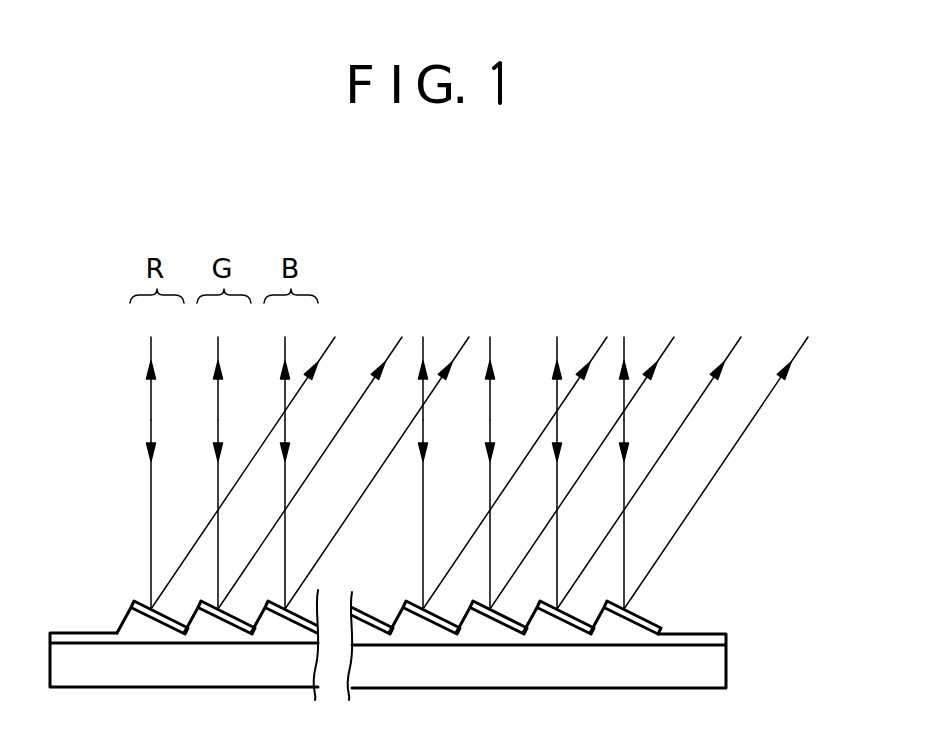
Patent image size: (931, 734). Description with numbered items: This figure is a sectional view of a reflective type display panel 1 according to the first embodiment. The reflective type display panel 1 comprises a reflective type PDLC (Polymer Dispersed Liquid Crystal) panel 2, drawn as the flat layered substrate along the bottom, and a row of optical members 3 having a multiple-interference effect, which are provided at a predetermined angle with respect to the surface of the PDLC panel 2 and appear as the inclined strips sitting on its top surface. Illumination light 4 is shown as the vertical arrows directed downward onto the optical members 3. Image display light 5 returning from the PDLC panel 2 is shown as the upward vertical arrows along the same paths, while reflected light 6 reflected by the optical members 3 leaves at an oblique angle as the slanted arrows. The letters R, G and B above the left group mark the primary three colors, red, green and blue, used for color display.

The reflective type display panel 1 is at (461, 642).
The reflective type PDLC panel 2 is at (718, 662).
The optical members 3 is at (658, 624).
The illumination light 4 is at (151, 452).
The image display light 5 is at (151, 372).
The reflected light 6 is at (370, 373).